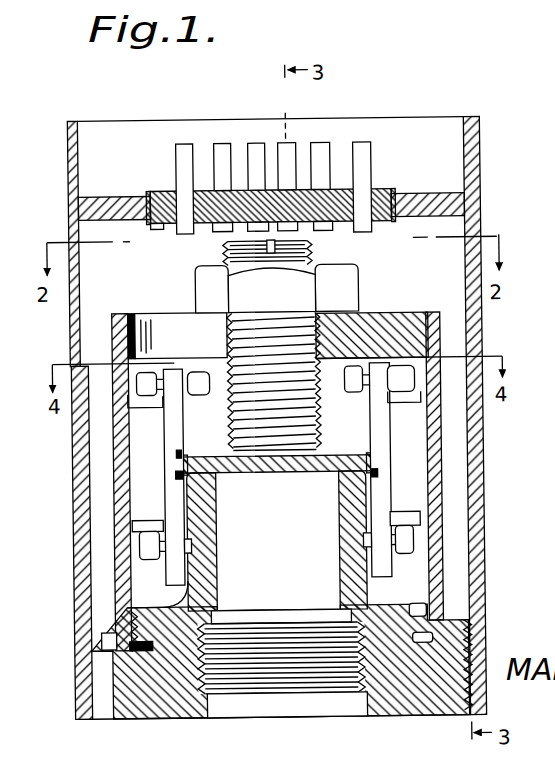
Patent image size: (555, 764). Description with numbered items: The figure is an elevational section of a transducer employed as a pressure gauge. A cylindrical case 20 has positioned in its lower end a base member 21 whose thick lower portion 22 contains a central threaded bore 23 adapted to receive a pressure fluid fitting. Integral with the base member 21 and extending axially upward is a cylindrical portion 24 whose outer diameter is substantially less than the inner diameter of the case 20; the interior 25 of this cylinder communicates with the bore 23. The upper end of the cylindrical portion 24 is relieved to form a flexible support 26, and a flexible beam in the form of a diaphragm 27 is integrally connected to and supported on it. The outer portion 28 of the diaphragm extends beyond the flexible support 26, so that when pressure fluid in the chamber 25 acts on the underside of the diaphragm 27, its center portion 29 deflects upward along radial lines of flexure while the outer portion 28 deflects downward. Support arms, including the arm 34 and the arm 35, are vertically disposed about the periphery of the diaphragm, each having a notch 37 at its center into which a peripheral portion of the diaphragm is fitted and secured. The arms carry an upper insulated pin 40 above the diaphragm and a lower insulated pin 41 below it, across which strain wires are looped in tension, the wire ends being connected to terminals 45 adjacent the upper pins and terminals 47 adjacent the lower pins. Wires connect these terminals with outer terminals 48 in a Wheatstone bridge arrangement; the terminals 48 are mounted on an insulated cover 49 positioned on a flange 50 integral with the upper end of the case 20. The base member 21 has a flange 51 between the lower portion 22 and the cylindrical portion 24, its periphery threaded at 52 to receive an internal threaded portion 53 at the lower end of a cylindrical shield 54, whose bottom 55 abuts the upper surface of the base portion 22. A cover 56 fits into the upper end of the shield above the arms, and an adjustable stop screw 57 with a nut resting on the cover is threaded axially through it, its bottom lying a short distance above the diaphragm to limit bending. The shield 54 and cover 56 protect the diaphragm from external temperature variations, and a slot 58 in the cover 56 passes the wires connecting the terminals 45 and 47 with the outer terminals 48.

The cylindrical case 20 is at (70, 126).
The base member 21 is at (112, 722).
The thick lower portion 22 is at (151, 703).
The central threaded bore 23 is at (205, 703).
The cylindrical portion 24 is at (338, 566).
The interior of cylinder 25 is at (290, 533).
The flexible support 26 is at (218, 482).
The diaphragm 27 is at (229, 460).
The outer portion of the diaphragm 28 is at (364, 458).
The center portion of the diaphragm 29 is at (289, 440).
The support arm 34 is at (412, 425).
The support arm 35 is at (176, 452).
The notch 37 is at (177, 473).
The upper insulated pin 40 is at (146, 406).
The lower insulated pin 41 is at (139, 518).
The terminal 45 is at (147, 382).
The terminal 47 is at (145, 546).
The terminal 48 is at (353, 143).
The insulated cover 49 is at (376, 185).
The flange 50 is at (125, 172).
The flange 51 is at (153, 623).
The threaded periphery 52 is at (411, 605).
The internal threaded portion 53 is at (440, 616).
The cylindrical shield 54 is at (120, 312).
The bottom of shield 55 is at (440, 641).
The cover 56 is at (168, 310).
The adjustable stop screw 57 is at (312, 249).
The slot 58 is at (158, 320).